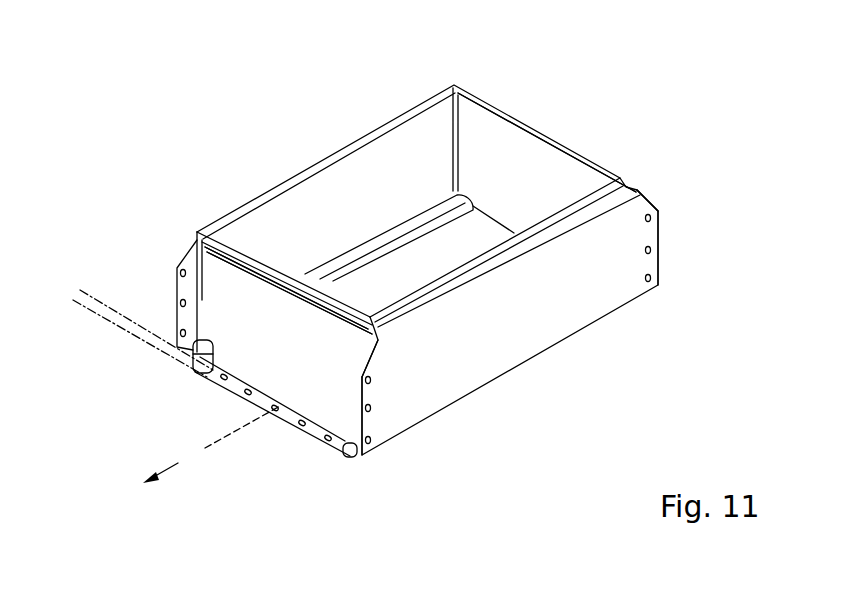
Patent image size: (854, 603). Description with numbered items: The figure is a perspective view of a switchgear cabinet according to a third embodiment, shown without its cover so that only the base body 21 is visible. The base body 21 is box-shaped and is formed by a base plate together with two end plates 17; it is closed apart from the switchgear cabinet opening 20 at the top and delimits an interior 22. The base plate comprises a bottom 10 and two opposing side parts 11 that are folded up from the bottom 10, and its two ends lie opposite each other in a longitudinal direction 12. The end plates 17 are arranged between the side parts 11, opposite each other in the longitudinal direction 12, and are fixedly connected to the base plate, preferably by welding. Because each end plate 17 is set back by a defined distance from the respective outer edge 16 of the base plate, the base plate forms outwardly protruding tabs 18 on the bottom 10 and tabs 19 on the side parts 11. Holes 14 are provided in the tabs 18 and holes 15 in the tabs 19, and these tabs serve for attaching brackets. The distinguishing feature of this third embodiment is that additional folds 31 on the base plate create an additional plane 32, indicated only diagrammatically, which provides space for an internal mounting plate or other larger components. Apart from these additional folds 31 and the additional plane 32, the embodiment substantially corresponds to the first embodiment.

The bottom 10 is at (448, 195).
The side parts 11 is at (365, 136).
The longitudinal direction 12 is at (172, 470).
The holes 14 is at (336, 447).
The holes 15 is at (372, 434).
The outer edges 16 is at (231, 394).
The end plates 17 is at (523, 127).
The tabs 18 is at (288, 415).
The tabs 19 is at (180, 283).
The switchgear cabinet opening 20 is at (553, 175).
The base body 21 is at (299, 83).
The interior 22 is at (320, 200).
The additional folds 31 is at (203, 381).
The additional plane 32 is at (102, 318).